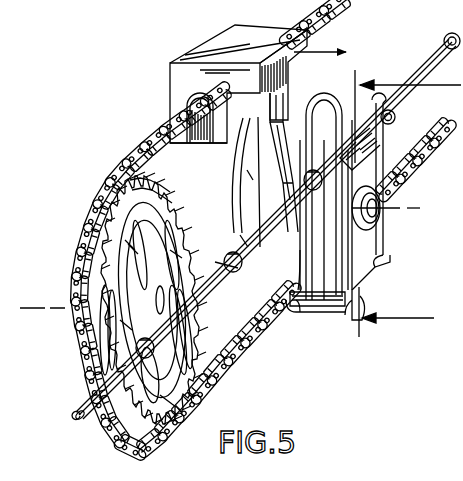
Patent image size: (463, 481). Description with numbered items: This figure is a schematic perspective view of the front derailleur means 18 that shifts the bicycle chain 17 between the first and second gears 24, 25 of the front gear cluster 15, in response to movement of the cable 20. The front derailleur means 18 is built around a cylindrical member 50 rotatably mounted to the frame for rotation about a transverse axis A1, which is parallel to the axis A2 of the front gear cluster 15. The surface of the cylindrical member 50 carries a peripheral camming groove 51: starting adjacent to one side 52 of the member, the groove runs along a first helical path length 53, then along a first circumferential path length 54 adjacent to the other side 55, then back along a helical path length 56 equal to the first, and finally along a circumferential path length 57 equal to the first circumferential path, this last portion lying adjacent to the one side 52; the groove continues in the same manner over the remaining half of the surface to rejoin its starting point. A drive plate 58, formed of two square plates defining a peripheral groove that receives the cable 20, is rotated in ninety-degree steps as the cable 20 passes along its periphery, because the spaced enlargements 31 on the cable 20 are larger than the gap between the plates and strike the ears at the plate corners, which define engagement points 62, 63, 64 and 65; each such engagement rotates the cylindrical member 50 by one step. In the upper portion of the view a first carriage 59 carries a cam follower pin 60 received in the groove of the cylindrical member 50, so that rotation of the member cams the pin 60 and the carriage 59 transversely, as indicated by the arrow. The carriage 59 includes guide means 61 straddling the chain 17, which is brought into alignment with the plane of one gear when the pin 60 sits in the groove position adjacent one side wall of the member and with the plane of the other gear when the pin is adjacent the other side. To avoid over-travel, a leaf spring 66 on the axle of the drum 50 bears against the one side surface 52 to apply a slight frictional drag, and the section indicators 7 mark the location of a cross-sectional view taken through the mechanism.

The front gear cluster 15 is at (96, 142).
The bicycle chain 17 is at (152, 116).
The front derailleur means 18 is at (141, 54).
The cable 20 is at (438, 62).
The first gear 24 is at (153, 173).
The second gear 25 is at (179, 214).
The enlargements 31 is at (392, 117).
The cylindrical member 50 is at (253, 180).
The peripheral camming groove 51 is at (298, 308).
The one side 52 is at (210, 316).
The first helical path length 53 is at (258, 233).
The first circumferential path length 54 is at (291, 250).
The other side 55 is at (344, 104).
The helical path length 56 is at (287, 160).
The circumferential path length 57 is at (270, 120).
The drive plate 58 is at (380, 236).
The first carriage 59 is at (201, 44).
The cam follower pin 60 is at (276, 84).
The guide means 61 is at (217, 147).
The engagement point 62 is at (381, 191).
The engagement point 63 is at (381, 267).
The engagement point 64 is at (358, 295).
The engagement point 65 is at (378, 150).
The leaf spring 66 is at (185, 245).
The section line 7- 7 is at (408, 203).
The transverse axis A1 is at (420, 207).
The axis of the front gear cluster A2 is at (33, 307).